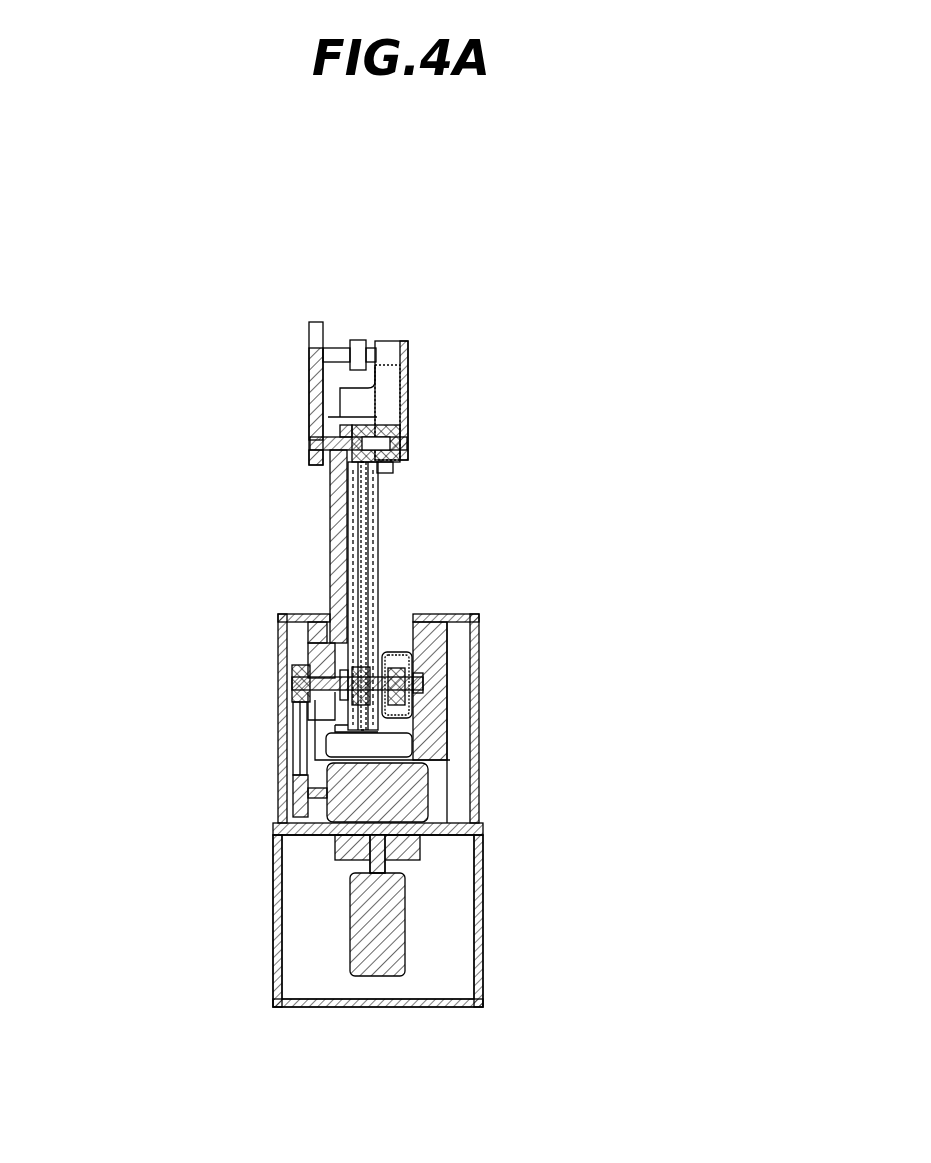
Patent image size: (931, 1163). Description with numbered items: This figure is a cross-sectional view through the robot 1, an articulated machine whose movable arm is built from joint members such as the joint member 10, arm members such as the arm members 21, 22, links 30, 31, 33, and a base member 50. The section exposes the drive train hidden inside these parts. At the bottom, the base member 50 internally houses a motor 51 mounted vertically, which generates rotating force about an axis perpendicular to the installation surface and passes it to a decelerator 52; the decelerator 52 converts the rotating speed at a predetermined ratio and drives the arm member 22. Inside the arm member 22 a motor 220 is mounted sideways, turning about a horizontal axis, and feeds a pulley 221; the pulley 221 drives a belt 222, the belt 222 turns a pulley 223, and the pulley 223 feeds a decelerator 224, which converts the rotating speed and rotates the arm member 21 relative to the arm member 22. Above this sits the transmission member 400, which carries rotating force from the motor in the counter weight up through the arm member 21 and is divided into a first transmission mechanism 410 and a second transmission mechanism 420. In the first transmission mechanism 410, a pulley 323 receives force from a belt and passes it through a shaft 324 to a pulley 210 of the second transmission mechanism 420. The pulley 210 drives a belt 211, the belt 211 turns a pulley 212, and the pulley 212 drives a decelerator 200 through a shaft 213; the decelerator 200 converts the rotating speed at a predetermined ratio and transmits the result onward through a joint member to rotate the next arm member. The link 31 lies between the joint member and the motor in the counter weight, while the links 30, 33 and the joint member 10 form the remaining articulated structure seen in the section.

The robot 1 is at (616, 313).
The joint member 10 is at (409, 360).
The arm member 21 is at (380, 507).
The arm member 22 is at (478, 758).
The link 30 is at (356, 340).
The link 31 is at (336, 512).
The link 33 is at (314, 400).
The base member 50 is at (440, 1009).
The motor 51 is at (380, 976).
The decelerator 52 is at (340, 858).
The decelerator 200 is at (388, 423).
The pulley 210 is at (336, 673).
The belt 211 is at (375, 552).
The pulley 212 is at (357, 410).
The shaft 213 is at (408, 445).
The motor 220 is at (320, 834).
The pulley 221 is at (298, 808).
The belt 222 is at (300, 740).
The pulley 223 is at (293, 676).
The decelerator 224 is at (307, 643).
The pulley 323 is at (413, 660).
The shaft 324 is at (425, 690).
The transmission member 400 is at (626, 436).
The first transmission mechanism 410 is at (395, 645).
The second transmission mechanism 420 is at (414, 463).